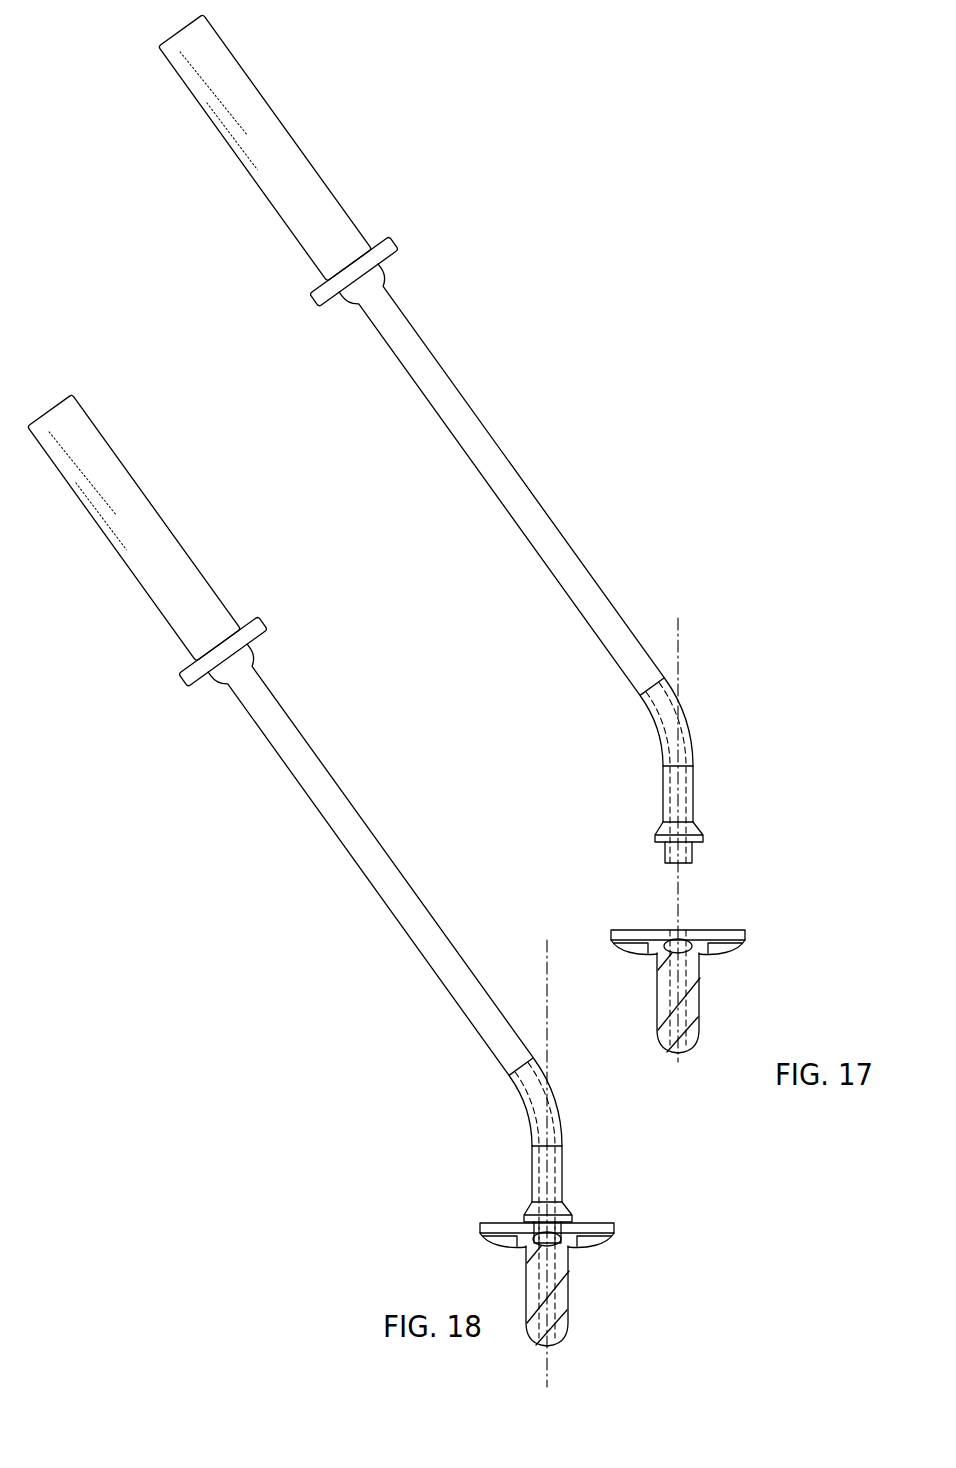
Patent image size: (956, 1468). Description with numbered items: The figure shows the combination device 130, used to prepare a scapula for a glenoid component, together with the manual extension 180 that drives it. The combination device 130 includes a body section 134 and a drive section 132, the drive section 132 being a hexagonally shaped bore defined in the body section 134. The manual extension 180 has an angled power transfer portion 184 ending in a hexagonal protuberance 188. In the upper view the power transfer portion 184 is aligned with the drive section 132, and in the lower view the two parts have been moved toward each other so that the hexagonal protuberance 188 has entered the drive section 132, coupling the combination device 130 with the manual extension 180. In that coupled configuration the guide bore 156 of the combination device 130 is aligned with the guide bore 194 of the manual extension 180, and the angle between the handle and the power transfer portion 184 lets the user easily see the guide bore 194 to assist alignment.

In FIG. 17, the manual extension 180 is at (482, 532).
In FIG. 18, the manual extension 180 is at (344, 884).
In FIG. 17, the power transfer portion 184 is at (694, 815).
In FIG. 17, the hexagonal protuberance 188 is at (693, 857).
In FIG. 18, the guide bore 194 is at (601, 1185).
In FIG. 17, the combination device 130 is at (732, 945).
In FIG. 18, the combination device 130 is at (608, 1284).
In FIG. 17, the drive section 132 is at (641, 895).
In FIG. 17, the body section 134 is at (724, 920).
In FIG. 17, the guide bore 156 is at (717, 991).
In FIG. 18, the guide bore 156 is at (600, 1284).